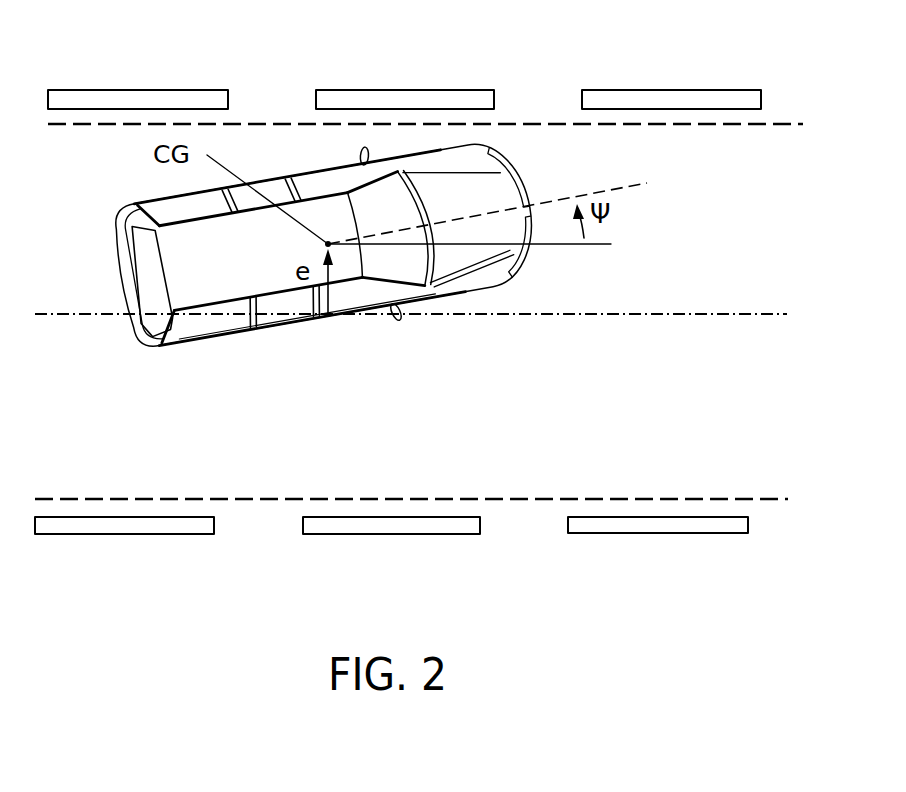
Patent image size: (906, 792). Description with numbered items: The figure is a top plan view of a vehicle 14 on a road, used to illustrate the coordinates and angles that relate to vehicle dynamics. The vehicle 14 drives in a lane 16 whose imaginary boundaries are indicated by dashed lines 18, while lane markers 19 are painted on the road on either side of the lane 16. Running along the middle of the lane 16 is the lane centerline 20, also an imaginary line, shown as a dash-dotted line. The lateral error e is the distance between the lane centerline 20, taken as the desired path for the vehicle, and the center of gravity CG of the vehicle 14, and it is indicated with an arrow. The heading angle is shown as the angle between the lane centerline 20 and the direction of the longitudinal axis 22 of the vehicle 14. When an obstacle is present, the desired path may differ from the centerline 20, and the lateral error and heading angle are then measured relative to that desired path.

The vehicle 14 is at (513, 173).
The lane 16 is at (742, 162).
The dashed lines 18 is at (240, 124).
The lane markers 19 is at (63, 90).
The lane centerline 20 is at (635, 314).
The longitudinal axis 22 is at (630, 188).